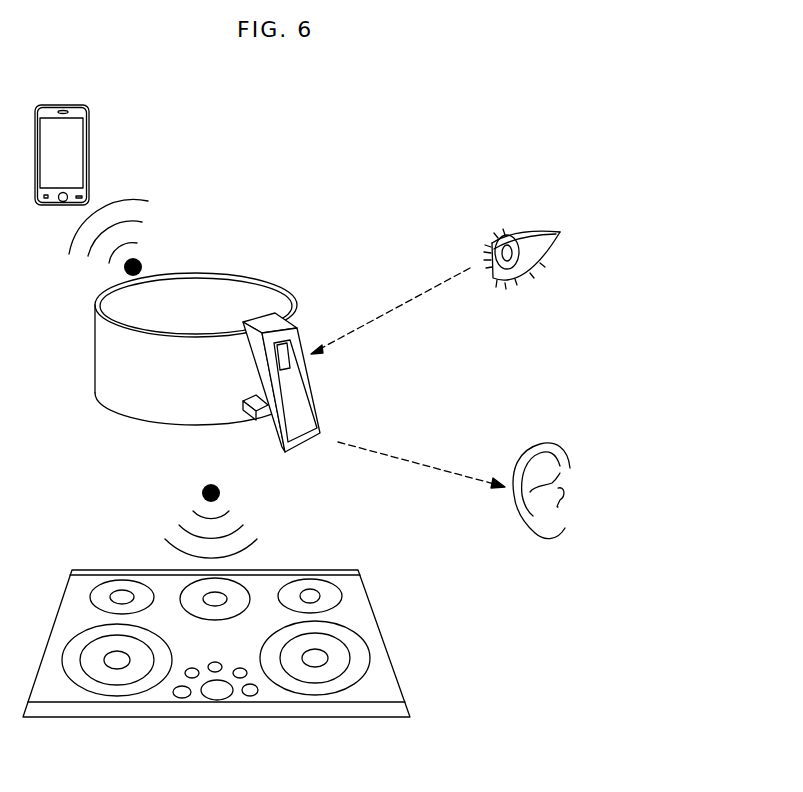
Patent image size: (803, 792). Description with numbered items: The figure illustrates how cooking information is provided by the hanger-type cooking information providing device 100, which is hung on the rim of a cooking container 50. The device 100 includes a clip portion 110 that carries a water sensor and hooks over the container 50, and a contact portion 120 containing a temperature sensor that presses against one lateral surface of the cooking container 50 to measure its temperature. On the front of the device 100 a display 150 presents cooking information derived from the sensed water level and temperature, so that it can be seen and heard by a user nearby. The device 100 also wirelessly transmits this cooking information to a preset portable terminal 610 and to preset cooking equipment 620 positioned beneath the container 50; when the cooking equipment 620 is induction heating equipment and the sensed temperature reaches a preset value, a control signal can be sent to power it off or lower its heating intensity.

The portable terminal 610 is at (65, 152).
The cooking container 50 is at (153, 292).
The hanger-type cooking information providing device 100 is at (289, 355).
The clip portion 110 is at (237, 313).
The display 150 is at (285, 363).
The contact portion 120 is at (252, 410).
The cooking equipment 620 is at (375, 640).